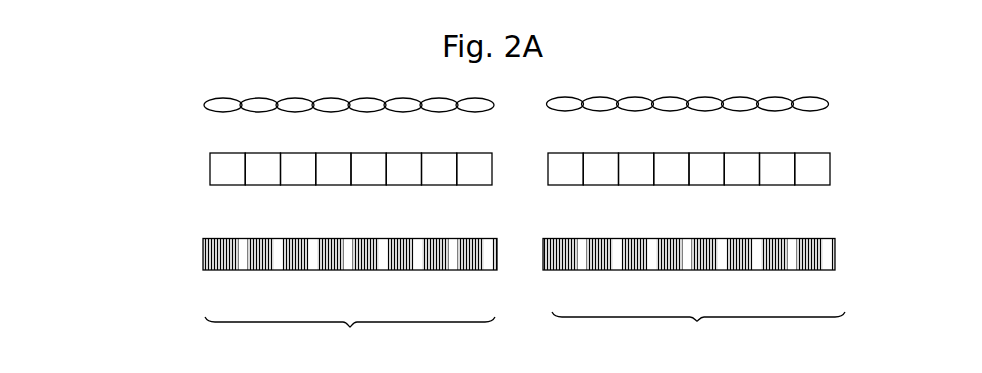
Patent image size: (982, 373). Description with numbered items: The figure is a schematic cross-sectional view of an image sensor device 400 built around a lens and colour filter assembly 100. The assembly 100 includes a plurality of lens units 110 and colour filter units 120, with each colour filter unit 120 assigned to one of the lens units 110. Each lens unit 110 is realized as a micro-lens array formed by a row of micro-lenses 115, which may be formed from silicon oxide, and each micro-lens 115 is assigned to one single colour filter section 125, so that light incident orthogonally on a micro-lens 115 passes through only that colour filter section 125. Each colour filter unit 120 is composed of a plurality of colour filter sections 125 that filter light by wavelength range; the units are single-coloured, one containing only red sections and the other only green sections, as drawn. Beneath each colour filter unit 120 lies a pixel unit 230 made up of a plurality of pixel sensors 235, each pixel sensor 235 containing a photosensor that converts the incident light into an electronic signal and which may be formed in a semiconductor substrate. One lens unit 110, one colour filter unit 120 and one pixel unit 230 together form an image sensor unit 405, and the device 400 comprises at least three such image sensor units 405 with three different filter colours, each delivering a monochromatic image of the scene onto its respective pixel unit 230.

The image sensor device 400 is at (740, 38).
The lens and colour filter assembly 100 is at (97, 90).
The lens unit 110 is at (207, 105).
The micro-lens 115 is at (297, 100).
The colour filter unit 120 is at (210, 167).
The colour filter section 125 is at (297, 186).
The pixel unit 230 is at (203, 254).
The pixel sensor 235 is at (297, 271).
The image sensor unit 405 is at (525, 340).